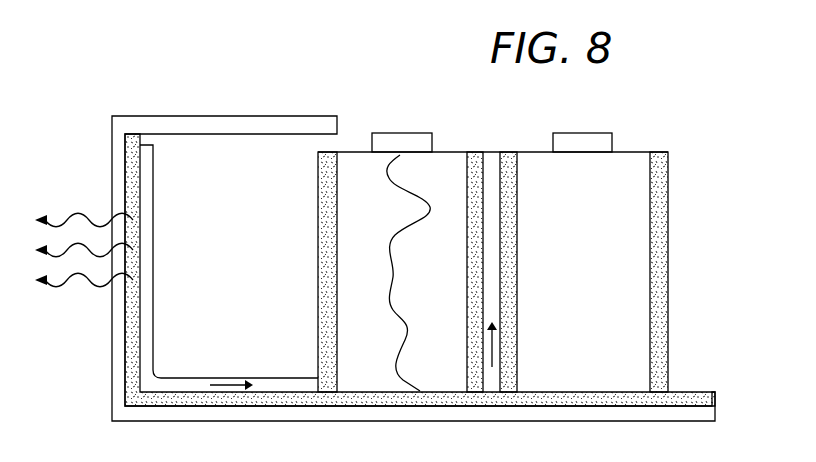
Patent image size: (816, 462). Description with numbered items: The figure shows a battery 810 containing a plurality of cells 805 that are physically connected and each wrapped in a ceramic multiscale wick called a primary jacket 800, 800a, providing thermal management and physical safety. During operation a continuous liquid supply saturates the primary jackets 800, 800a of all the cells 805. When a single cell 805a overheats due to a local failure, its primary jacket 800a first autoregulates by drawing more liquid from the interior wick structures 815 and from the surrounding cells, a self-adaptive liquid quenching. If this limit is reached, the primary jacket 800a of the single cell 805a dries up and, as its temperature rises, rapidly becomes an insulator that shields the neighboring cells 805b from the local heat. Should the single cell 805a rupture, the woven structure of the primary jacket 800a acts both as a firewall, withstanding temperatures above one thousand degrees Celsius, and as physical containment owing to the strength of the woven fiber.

The primary jacket 800 is at (657, 202).
The primary jacket 800a is at (322, 175).
The cells 805 is at (363, 172).
The single cell 805a is at (457, 269).
The neighboring cells 805b is at (613, 269).
The battery 810 is at (127, 112).
The interior wick structures 815 is at (133, 362).